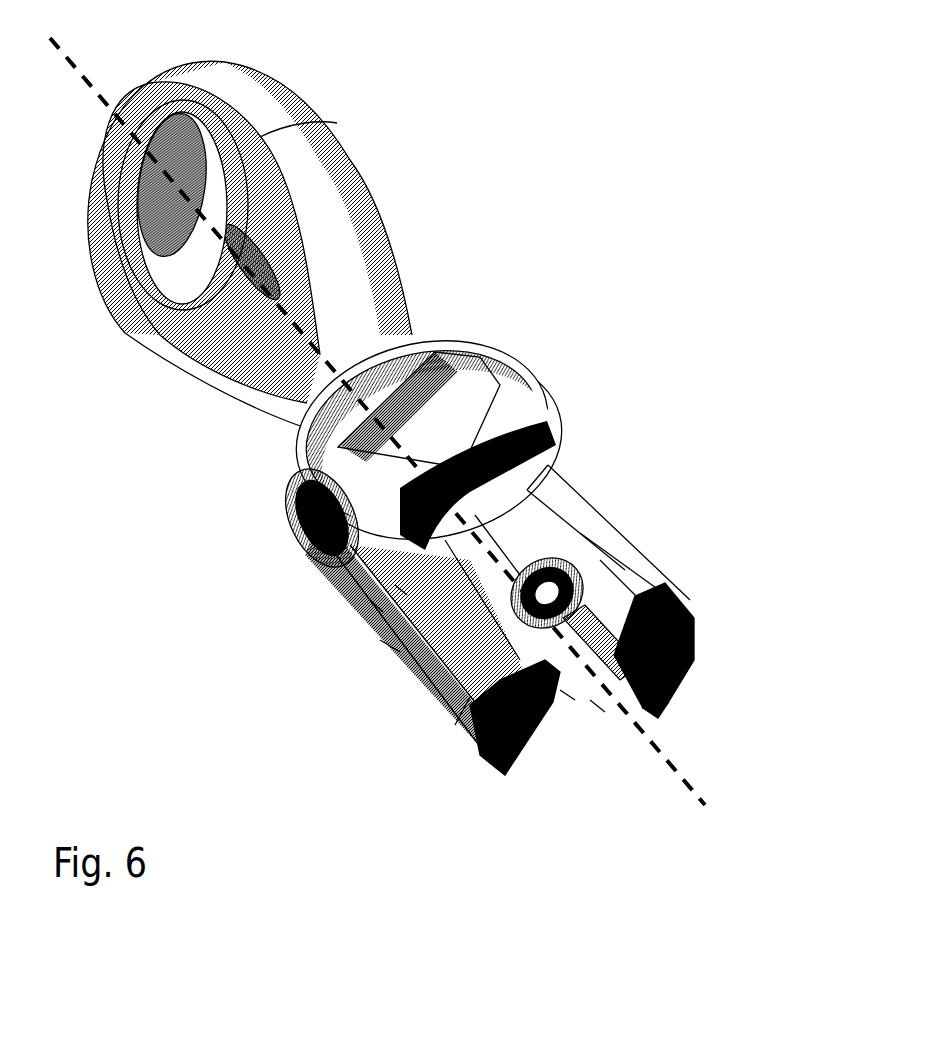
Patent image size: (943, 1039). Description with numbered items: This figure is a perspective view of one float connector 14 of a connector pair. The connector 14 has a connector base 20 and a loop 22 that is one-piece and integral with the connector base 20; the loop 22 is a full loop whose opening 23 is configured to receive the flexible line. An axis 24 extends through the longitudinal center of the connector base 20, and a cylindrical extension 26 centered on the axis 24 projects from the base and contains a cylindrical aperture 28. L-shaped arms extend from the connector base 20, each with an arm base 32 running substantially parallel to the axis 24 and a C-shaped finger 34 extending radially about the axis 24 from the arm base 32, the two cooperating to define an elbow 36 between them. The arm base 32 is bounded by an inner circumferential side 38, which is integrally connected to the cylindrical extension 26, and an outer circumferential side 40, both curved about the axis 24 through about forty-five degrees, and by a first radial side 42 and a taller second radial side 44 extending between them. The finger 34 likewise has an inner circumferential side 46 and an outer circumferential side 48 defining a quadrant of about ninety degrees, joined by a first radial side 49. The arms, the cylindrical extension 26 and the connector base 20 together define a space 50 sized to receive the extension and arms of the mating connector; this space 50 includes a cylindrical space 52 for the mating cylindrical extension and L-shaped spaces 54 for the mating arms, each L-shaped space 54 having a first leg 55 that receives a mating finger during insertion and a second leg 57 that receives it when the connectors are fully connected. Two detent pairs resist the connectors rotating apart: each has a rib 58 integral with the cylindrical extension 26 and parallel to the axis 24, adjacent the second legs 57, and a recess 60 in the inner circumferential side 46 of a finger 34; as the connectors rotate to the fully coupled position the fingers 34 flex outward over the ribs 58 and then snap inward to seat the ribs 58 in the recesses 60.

The connector 14 is at (391, 451).
The connector base 20 is at (464, 578).
The loop 22 is at (340, 166).
The opening 23 is at (140, 257).
The axis 24 is at (667, 783).
The extension 26 is at (515, 508).
The cylindrical aperture 28 is at (545, 588).
The arm base 32 is at (400, 652).
The C-shaped finger 34 is at (470, 697).
The elbow 36 is at (497, 767).
The inner circumferential side 38 is at (550, 536).
The outer circumferential side 40 is at (383, 612).
The first radial side 42 is at (407, 595).
The second radial side 44 is at (615, 527).
The inner circumferential side 46 is at (643, 645).
The outer circumferential side 48 is at (477, 713).
The first radial side 49 is at (520, 627).
The space 50 is at (606, 718).
The cylindrical space 52 is at (573, 731).
The L-shaped space 54 is at (550, 459).
The first leg 55 is at (633, 611).
The second leg 57 is at (399, 542).
The rib 58 is at (444, 419).
The recess 60 is at (648, 695).